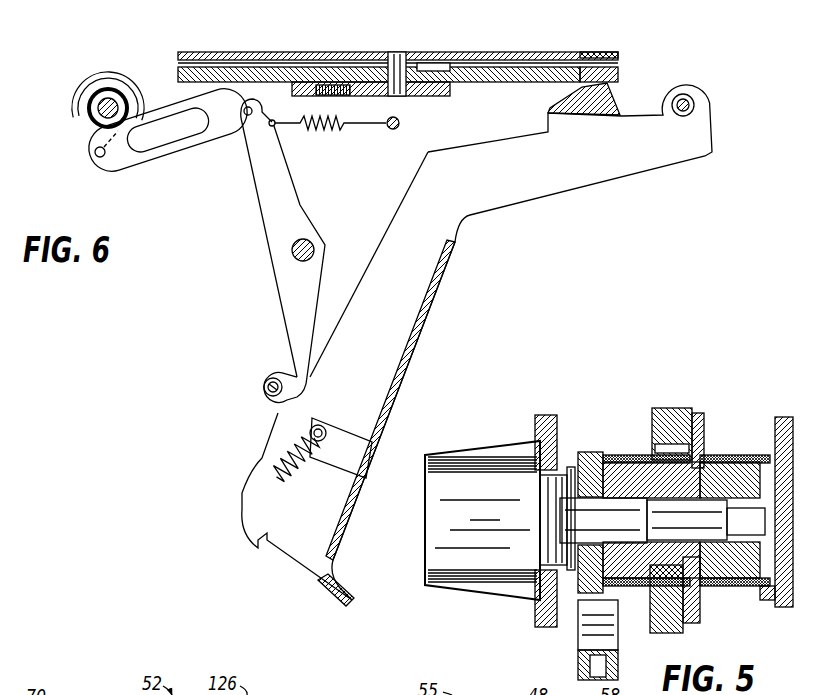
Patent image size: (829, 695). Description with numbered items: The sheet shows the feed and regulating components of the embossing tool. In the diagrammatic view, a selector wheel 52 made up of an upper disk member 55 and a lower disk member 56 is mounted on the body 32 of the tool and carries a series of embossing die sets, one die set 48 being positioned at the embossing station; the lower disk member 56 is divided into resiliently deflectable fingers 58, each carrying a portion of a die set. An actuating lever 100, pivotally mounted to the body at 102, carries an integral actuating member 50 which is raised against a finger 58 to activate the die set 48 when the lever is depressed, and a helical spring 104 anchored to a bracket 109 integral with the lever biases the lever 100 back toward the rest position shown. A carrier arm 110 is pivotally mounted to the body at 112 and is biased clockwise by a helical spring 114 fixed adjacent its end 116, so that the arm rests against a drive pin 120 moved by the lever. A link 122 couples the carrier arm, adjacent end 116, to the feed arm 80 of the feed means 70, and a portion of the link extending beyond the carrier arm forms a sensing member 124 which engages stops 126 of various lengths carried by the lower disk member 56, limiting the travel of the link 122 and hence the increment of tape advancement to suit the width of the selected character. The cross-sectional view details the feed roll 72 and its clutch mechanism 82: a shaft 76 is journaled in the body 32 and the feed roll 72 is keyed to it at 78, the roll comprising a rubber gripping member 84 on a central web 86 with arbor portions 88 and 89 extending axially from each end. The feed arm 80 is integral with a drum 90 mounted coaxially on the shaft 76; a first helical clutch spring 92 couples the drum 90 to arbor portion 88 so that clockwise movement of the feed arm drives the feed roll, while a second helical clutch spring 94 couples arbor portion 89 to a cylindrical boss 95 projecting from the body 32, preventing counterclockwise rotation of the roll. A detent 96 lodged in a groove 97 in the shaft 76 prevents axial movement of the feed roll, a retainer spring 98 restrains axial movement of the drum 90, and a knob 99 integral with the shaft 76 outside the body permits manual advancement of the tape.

In FIG. 5, the body 32 is at (534, 614).
In FIG. 6, the embossing die set 48 is at (588, 53).
In FIG. 6, the actuating member 50 is at (612, 101).
In FIG. 6, the selector wheel 52 is at (200, 50).
In FIG. 6, the upper disk member 55 is at (525, 51).
In FIG. 6, the lower disk member 56 is at (527, 84).
In FIG. 6, the fingers 58 is at (613, 80).
In FIG. 6, the feed means 70 is at (84, 72).
In FIG. 6, the feed roll 72 is at (120, 72).
In FIG. 5, the feed roll 72 is at (693, 416).
In FIG. 6, the shaft 76 is at (116, 98).
In FIG. 5, the shaft 76 is at (580, 452).
In FIG. 5, the key 78 is at (736, 458).
In FIG. 6, the feed arm 80 is at (95, 137).
In FIG. 5, the feed arm 80 is at (577, 665).
In FIG. 6, the clutch mechanism 82 is at (88, 110).
In FIG. 5, the clutch mechanism 82 is at (734, 597).
In FIG. 5, the rubber gripping member 84 is at (657, 408).
In FIG. 5, the central web 86 is at (684, 448).
In FIG. 5, the arbor portion 88 is at (643, 456).
In FIG. 5, the arbor portion 89 is at (738, 455).
In FIG. 5, the drum 90 is at (612, 457).
In FIG. 5, the first helical clutch spring 92 is at (620, 586).
In FIG. 5, the second helical clutch spring 94 is at (752, 590).
In FIG. 5, the cylindrical boss 95 is at (760, 577).
In FIG. 5, the detent 96 is at (647, 504).
In FIG. 5, the groove 97 is at (646, 519).
In FIG. 5, the retainer spring 98 is at (573, 466).
In FIG. 5, the knob 99 is at (493, 447).
In FIG. 6, the actuating lever 100 is at (486, 204).
In FIG. 6, the pivot 102 is at (695, 104).
In FIG. 6, the helical spring 104 is at (281, 486).
In FIG. 6, the bracket 109 is at (333, 430).
In FIG. 6, the carrier arm 110 is at (300, 209).
In FIG. 6, the pivot 112 is at (292, 250).
In FIG. 6, the helical spring 114 is at (316, 130).
In FIG. 6, the end of carrier arm 116 is at (256, 134).
In FIG. 6, the drive pin 120 is at (264, 381).
In FIG. 6, the link 122 is at (177, 152).
In FIG. 6, the sensing member 124 is at (258, 96).
In FIG. 6, the stops 126 is at (292, 87).